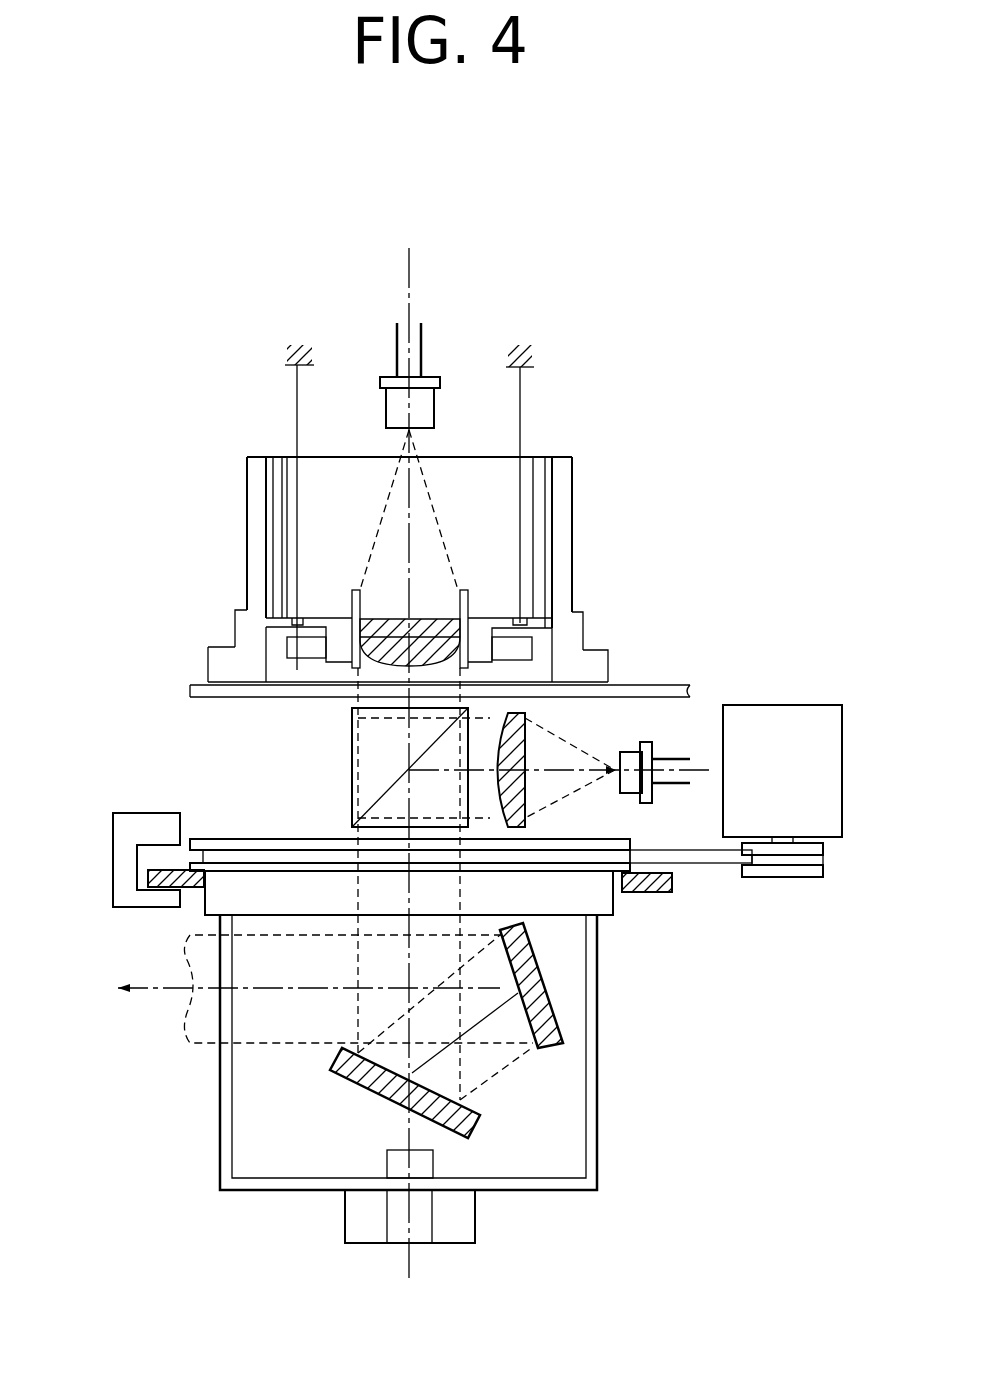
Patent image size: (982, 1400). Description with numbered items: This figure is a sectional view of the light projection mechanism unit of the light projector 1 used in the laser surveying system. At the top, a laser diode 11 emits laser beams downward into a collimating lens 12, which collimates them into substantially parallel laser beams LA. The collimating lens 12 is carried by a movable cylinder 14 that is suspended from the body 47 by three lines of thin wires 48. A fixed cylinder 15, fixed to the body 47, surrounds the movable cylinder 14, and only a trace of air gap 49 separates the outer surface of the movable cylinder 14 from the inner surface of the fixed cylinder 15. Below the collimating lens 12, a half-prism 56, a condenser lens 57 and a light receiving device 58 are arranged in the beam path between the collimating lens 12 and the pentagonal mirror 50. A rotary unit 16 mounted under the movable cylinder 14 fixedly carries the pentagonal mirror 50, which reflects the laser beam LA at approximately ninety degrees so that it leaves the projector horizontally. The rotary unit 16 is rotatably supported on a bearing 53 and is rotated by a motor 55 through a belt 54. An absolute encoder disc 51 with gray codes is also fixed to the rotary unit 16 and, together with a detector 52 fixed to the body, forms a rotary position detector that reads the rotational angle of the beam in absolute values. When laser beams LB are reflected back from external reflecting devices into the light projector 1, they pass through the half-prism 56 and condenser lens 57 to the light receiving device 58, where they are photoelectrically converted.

The light projector 1 is at (632, 365).
The laser diode 11 is at (436, 405).
The collimating lens 12 is at (372, 622).
The movable cylinder 14 is at (533, 490).
The fixed cylinder 15 is at (556, 538).
The rotary unit 16 is at (598, 1070).
The body 47 is at (526, 343).
The thin wires 48 is at (296, 408).
The air gap 49 is at (550, 457).
The pentagonal mirror 50 is at (477, 1120).
The absolute encoder disc 51 is at (648, 893).
The detector 52 is at (122, 830).
The bearing 53 is at (353, 1213).
The belt 54 is at (722, 865).
The motor 55 is at (798, 707).
The half-prism 56 is at (370, 783).
The condenser lens 57 is at (512, 725).
The light receiving device 58 is at (646, 742).
The reflected laser beams LB is at (432, 768).
The parallel laser beams LA is at (297, 989).